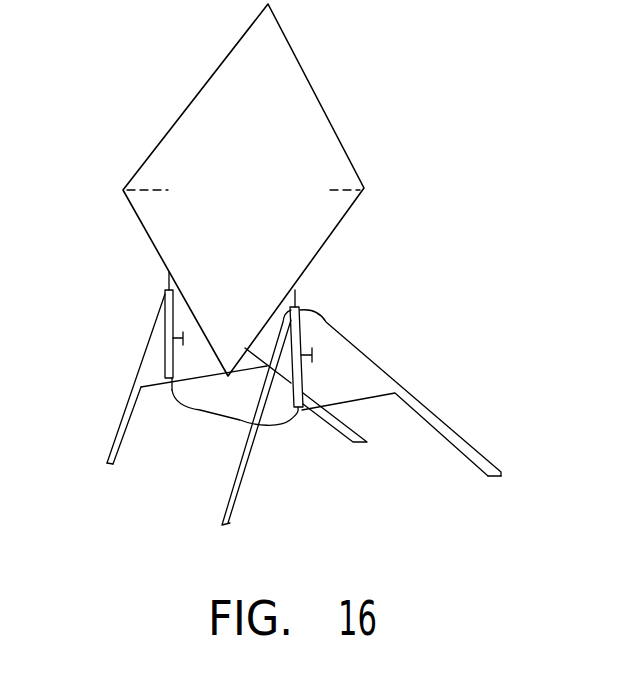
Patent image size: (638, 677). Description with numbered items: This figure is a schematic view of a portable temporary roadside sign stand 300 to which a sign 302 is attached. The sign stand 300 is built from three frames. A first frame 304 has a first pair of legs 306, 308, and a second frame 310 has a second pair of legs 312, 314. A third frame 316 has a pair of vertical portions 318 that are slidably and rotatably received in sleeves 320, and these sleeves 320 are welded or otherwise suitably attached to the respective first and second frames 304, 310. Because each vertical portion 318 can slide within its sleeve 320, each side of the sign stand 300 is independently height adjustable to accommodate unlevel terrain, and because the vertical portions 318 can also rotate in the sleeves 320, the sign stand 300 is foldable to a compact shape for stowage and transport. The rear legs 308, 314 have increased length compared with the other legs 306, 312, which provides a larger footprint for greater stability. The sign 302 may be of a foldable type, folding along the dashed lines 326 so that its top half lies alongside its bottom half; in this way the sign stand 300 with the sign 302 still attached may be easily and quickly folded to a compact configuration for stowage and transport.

The sign stand 300 is at (418, 107).
The sign 302 is at (278, 42).
The first frame 304 is at (355, 346).
The leg 306 is at (226, 504).
The leg 308 is at (482, 454).
The second frame 310 is at (140, 362).
The leg 312 is at (110, 449).
The leg 314 is at (350, 446).
The third frame 316 is at (190, 410).
The vertical portions 318 is at (172, 390).
The sleeves 320 is at (165, 298).
The dashed lines 326 is at (336, 188).